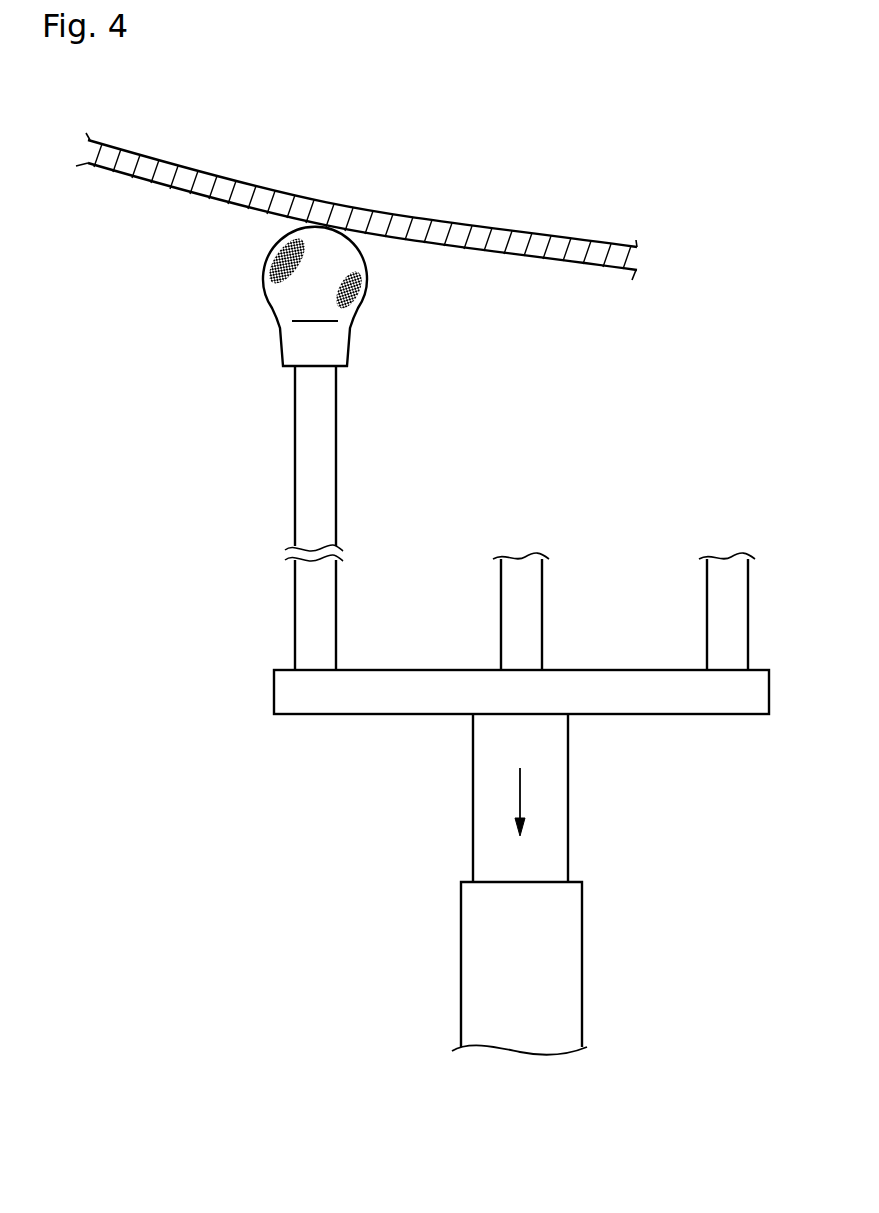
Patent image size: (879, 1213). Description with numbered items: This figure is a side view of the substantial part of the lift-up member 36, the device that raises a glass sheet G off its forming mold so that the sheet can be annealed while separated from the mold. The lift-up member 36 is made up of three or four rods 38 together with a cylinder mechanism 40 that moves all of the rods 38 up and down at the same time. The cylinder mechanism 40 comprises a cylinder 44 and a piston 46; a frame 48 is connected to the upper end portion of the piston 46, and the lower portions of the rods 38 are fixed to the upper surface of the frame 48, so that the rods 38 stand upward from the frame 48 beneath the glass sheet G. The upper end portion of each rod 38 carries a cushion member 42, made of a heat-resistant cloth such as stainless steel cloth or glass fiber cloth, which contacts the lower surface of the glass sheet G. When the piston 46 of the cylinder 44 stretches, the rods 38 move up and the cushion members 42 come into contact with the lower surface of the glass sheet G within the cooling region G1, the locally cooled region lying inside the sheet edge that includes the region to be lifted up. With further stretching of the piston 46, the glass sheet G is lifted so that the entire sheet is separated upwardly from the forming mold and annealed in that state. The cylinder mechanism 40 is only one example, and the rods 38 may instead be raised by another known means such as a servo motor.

The glass sheet G is at (259, 185).
The cooling region G1 is at (380, 213).
The lift-up member 36 is at (194, 370).
The rod 38 is at (326, 598).
The cylinder mechanism 40 is at (661, 852).
The cushion member 42 is at (352, 260).
The cylinder 44 is at (573, 967).
The piston 46 is at (561, 798).
The frame 48 is at (368, 707).